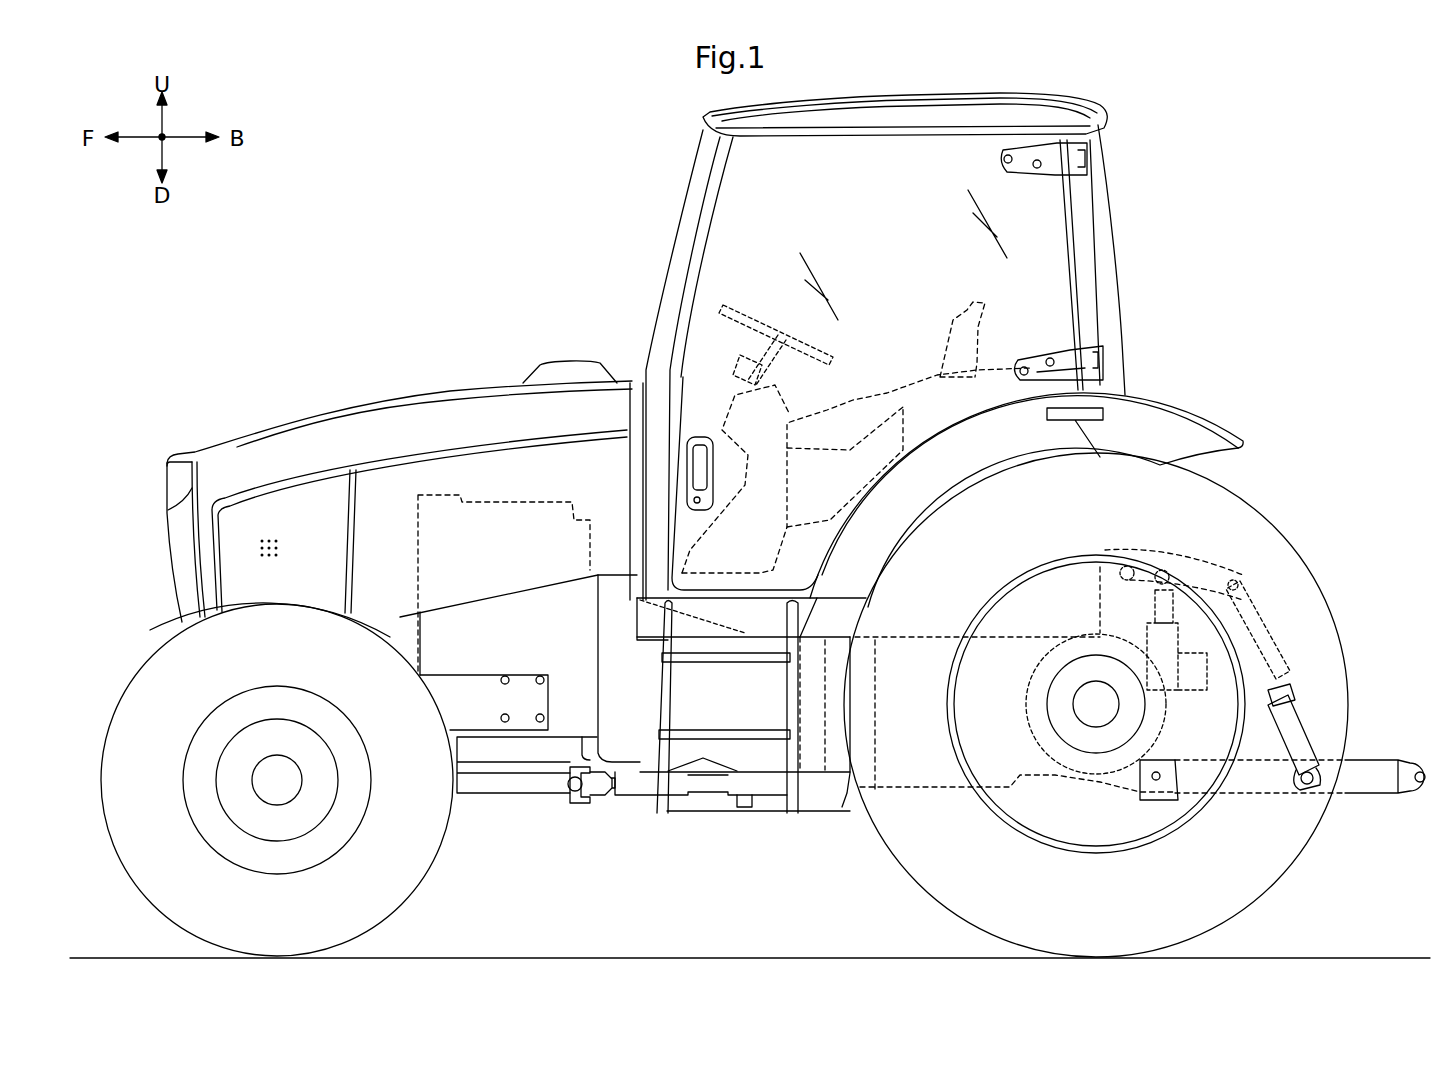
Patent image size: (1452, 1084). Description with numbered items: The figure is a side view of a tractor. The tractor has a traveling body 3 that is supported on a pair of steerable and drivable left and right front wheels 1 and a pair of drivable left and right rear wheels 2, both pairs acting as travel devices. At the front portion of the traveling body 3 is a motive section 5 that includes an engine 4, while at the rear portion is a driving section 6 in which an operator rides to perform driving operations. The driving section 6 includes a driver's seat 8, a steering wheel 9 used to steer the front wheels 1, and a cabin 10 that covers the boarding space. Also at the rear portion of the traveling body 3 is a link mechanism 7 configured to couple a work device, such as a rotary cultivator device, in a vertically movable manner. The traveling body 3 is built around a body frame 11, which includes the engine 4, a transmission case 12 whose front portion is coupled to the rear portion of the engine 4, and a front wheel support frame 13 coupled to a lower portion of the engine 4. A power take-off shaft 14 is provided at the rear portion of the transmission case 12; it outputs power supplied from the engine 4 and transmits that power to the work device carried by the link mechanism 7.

The front wheels 1 is at (425, 868).
The rear wheels 2 is at (912, 880).
The traveling body 3 is at (801, 843).
The engine 4 is at (563, 722).
The motive section 5 is at (410, 387).
The driving section 6 is at (941, 340).
The link mechanism 7 is at (1365, 797).
The driver's seat 8 is at (948, 335).
The steering wheel 9 is at (765, 325).
The cabin 10 is at (1115, 118).
The body frame 11 is at (760, 778).
The transmission case 12 is at (826, 772).
The front wheel support frame 13 is at (475, 680).
The power take-off shaft 14 is at (1228, 770).